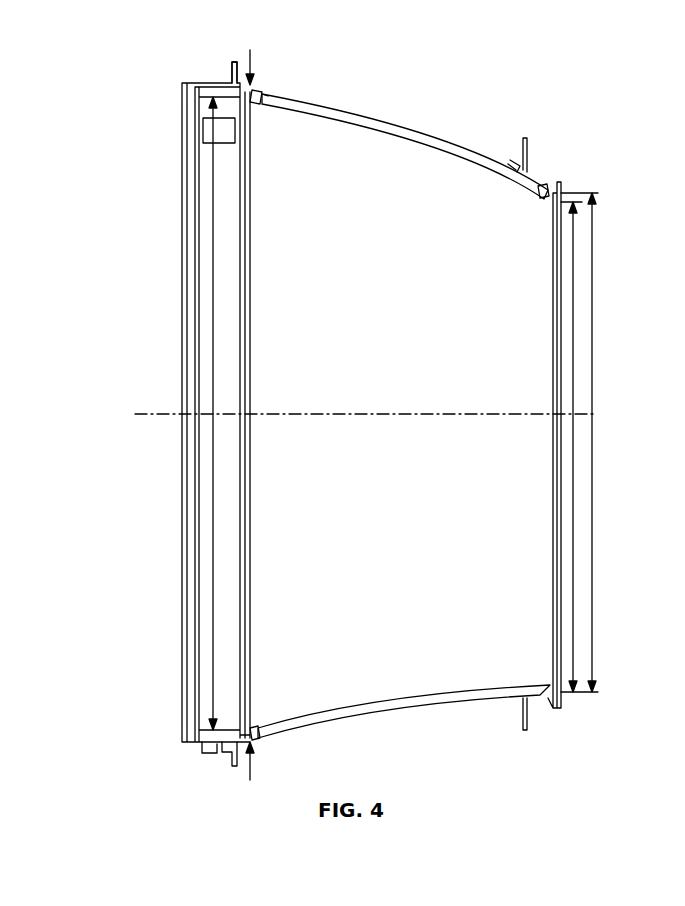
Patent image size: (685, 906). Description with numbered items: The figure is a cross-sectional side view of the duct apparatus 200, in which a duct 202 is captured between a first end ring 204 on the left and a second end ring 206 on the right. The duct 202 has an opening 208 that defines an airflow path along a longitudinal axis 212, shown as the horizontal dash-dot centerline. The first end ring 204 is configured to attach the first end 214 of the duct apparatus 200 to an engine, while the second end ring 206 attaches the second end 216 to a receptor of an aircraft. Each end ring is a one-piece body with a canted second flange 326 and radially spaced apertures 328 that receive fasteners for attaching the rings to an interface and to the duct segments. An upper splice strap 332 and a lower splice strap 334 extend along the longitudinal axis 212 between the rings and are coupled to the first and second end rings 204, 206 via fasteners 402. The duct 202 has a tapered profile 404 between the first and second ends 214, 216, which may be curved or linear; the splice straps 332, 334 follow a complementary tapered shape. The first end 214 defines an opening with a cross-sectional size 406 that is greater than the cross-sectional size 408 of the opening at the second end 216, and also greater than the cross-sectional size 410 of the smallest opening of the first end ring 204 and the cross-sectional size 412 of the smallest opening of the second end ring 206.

The duct apparatus 200 is at (387, 63).
The duct 202 is at (265, 212).
The first end ring 204 is at (208, 83).
The second end ring 206 is at (527, 137).
The opening 208 is at (423, 575).
The longitudinal axis 212 is at (432, 415).
The first end 214 is at (256, 58).
The second end 216 is at (551, 156).
The second flange 326 is at (267, 92).
The apertures 328 is at (213, 753).
The splice strap 332 is at (405, 135).
The splice strap 334 is at (443, 688).
The fasteners 402 is at (263, 87).
The tapered profile 404 is at (385, 114).
The cross-sectional size 406 is at (253, 768).
The cross-sectional size 408 is at (594, 283).
The cross-sectional size 410 is at (212, 350).
The cross-sectional size 412 is at (574, 325).